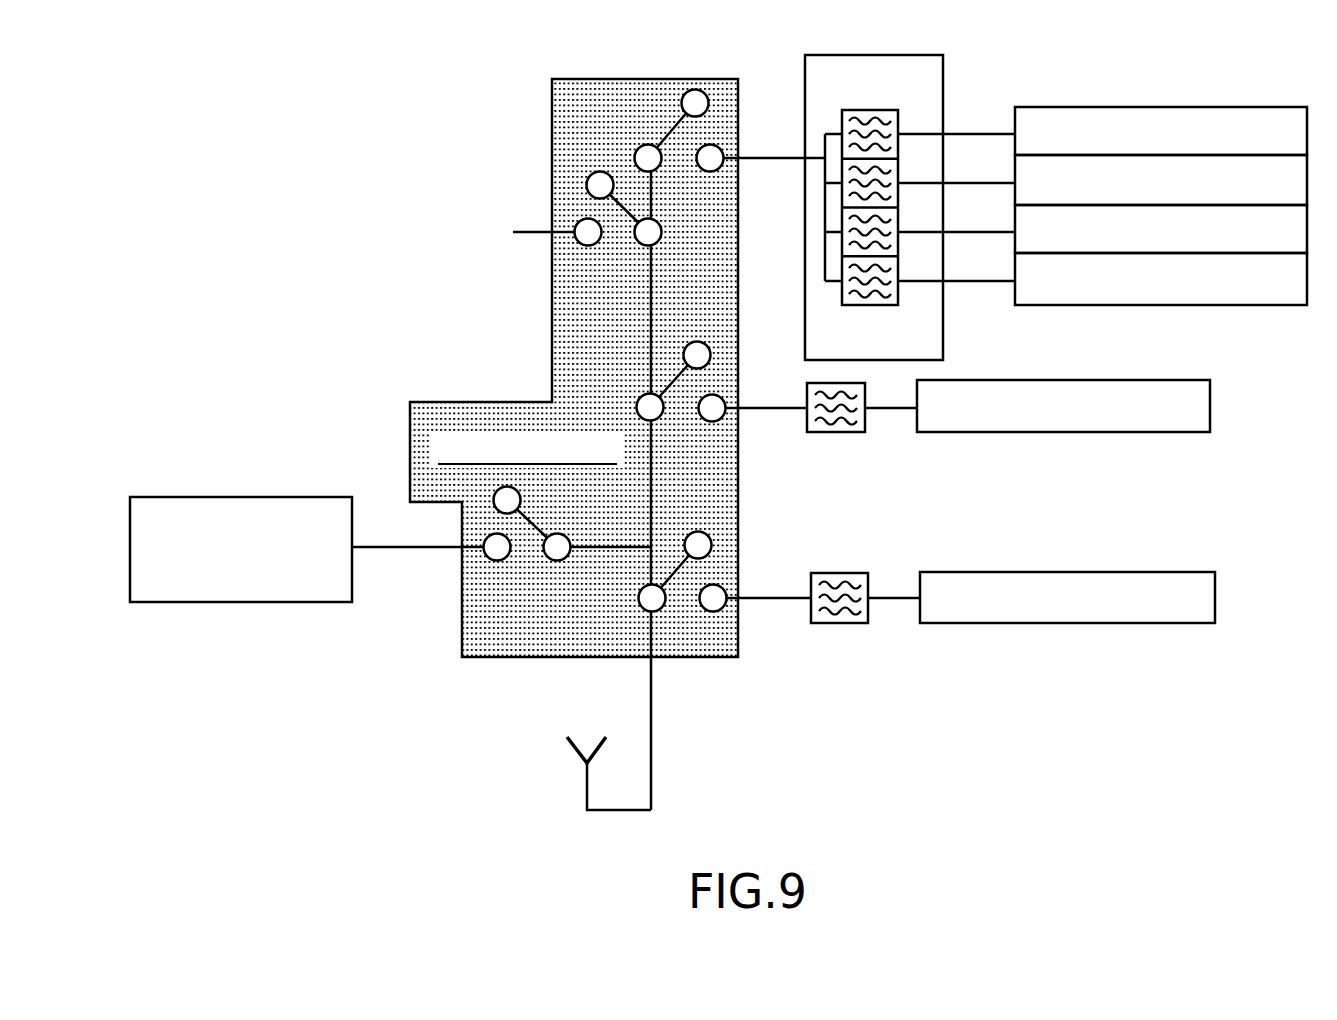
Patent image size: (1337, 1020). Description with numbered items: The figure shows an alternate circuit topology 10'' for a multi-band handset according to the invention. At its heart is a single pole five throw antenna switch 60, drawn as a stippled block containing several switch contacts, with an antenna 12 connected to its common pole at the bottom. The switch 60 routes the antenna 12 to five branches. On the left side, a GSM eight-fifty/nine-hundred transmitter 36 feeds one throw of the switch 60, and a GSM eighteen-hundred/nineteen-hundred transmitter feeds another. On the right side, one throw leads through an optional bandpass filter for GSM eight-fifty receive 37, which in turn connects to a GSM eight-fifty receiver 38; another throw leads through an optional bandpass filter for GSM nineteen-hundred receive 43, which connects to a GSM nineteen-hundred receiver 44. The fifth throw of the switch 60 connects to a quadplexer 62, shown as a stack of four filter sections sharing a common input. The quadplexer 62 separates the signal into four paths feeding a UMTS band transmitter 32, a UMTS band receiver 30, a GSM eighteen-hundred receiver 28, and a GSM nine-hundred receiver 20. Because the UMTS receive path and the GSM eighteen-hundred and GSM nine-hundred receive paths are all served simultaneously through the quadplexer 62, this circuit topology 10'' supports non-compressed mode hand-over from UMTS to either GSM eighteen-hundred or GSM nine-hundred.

The alternate circuit topology 10'' is at (718, 413).
The antenna 12 is at (555, 780).
The GSM 900 receiver 20 is at (1298, 289).
The GSM 1800 receiver 28 is at (1298, 240).
The UMTS band receiver 30 is at (1298, 192).
The UMTS band transmitter 32 is at (1298, 142).
The GSM 850/900 transmitter 36 is at (184, 538).
The bandpass filter for GSM 850 receive 37 is at (840, 623).
The GSM 850 receiver 38 is at (1207, 602).
The bandpass filter for GSM 1900 receive 43 is at (835, 432).
The GSM 1900 receiver 44 is at (1203, 412).
The single pole five throw switch 60 is at (643, 79).
The quadplexer 62 is at (886, 96).